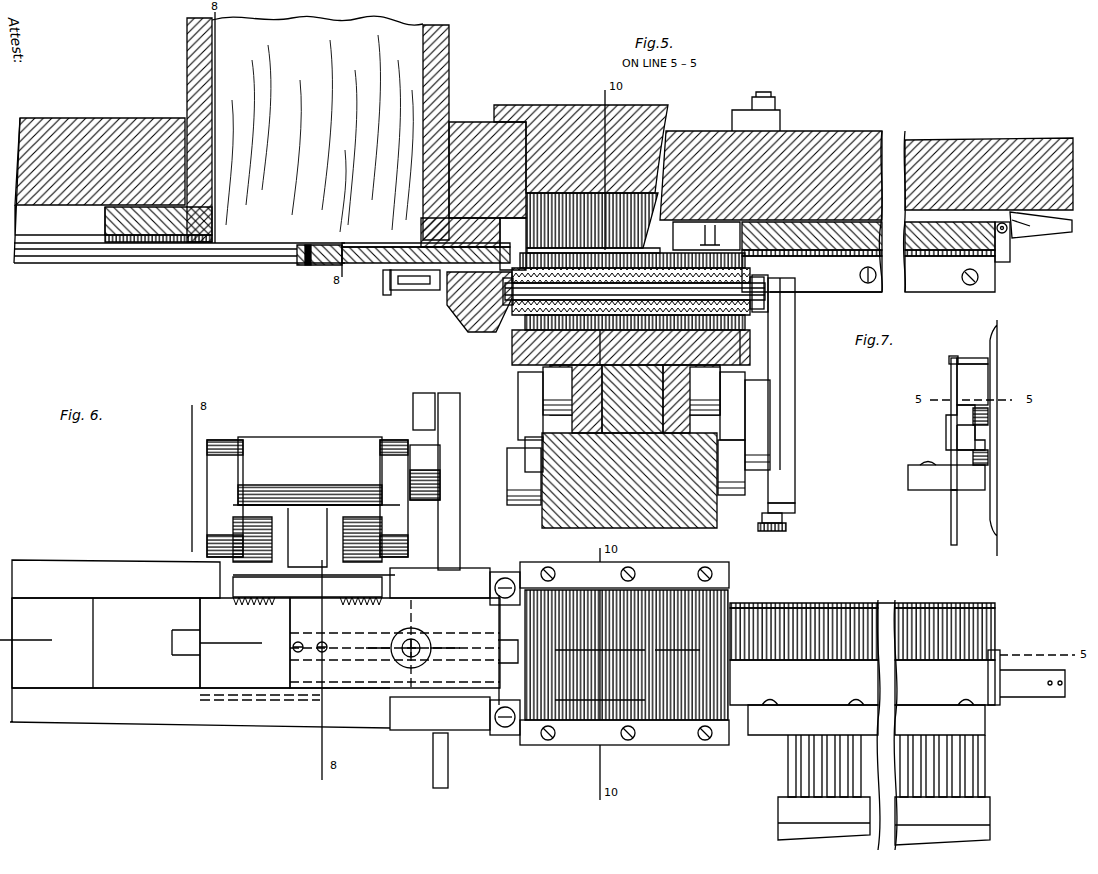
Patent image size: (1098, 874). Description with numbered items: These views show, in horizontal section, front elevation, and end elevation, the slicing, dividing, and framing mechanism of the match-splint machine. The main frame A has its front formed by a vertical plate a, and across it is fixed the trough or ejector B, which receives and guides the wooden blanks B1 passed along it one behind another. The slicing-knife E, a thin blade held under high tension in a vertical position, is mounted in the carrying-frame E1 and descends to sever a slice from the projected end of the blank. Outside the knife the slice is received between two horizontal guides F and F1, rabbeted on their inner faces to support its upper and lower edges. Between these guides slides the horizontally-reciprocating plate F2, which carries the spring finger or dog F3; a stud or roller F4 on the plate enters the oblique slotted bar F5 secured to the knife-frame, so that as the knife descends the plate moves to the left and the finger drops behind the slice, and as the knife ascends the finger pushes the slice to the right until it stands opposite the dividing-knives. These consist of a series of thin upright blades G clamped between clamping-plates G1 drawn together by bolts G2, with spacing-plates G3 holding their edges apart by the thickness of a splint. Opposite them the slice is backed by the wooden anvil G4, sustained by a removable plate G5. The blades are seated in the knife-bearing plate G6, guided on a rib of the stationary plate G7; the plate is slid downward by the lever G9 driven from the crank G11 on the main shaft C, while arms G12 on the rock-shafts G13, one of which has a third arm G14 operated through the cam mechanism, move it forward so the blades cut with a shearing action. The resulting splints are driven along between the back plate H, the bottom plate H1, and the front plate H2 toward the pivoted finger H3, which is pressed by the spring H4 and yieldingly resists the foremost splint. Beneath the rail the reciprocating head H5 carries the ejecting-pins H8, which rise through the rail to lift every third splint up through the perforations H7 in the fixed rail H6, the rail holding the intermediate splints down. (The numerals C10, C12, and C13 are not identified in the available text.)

In FIG. 5, the main frame A is at (112, 113).
In FIG. 5, the vertical plate a is at (544, 169).
In FIG. 5, the trough or ejector B is at (188, 66).
In FIG. 5, the wooden blocks or blanks B1 is at (298, 149).
In FIG. 6, the wooden blocks or blanks B1 is at (258, 664).
In FIG. 6, the main shaft C is at (316, 521).
In FIG. 6, the carriage rollers C10 is at (309, 498).
In FIG. 6, the carriage roller C12 is at (425, 446).
In FIG. 6, the carriage arm C13 is at (452, 540).
In FIG. 5, the slicing-knife E is at (420, 226).
In FIG. 5, the carrying-frame E1 is at (452, 335).
In FIG. 6, the horizontal bar or guide F is at (166, 589).
In FIG. 5, the horizontal bar or guide F1 is at (200, 258).
In FIG. 6, the horizontal bar or guide F1 is at (78, 713).
In FIG. 5, the horizontally-reciprocating plate F2 is at (340, 263).
In FIG. 6, the horizontally-reciprocating plate F2 is at (364, 623).
In FIG. 5, the spring finger or dog F3 is at (390, 249).
In FIG. 6, the spring finger or dog F3 is at (498, 668).
In FIG. 5, the stud or roller F4 is at (415, 290).
In FIG. 6, the stud or roller F4 is at (400, 658).
In FIG. 5, the oblique slotted bar F5 is at (388, 292).
In FIG. 5, the dividing-knives G is at (632, 291).
In FIG. 5, the clamping-plates G1 is at (723, 267).
In FIG. 5, the bolts G2 is at (634, 291).
In FIG. 5, the spacing-plates G3 is at (712, 347).
In FIG. 5, the anvil G4 is at (593, 223).
In FIG. 5, the removable plate G5 is at (589, 100).
In FIG. 5, the knife-bearing plate G6 is at (548, 421).
In FIG. 5, the stationary plate G7 is at (629, 480).
In FIG. 5, the lever G9 is at (628, 347).
In FIG. 5, the crank G11 is at (631, 347).
In FIG. 5, the arms G12 is at (748, 430).
In FIG. 5, the rock-shafts G13 is at (508, 466).
In FIG. 5, the third arm G14 is at (794, 389).
In FIG. 5, the back plate H is at (900, 242).
In FIG. 7, the back plate H is at (980, 390).
In FIG. 6, the bottom plate H1 is at (786, 730).
In FIG. 7, the bottom plate H1 is at (976, 488).
In FIG. 5, the front plate H2 is at (815, 256).
In FIG. 6, the front plate H2 is at (838, 687).
In FIG. 7, the front plate H2 is at (947, 436).
In FIG. 5, the pivoted finger or resistant H3 is at (998, 248).
In FIG. 6, the pivoted finger or resistant H3 is at (996, 663).
In FIG. 7, the pivoted finger or resistant H3 is at (975, 445).
In FIG. 5, the spring H4 is at (1070, 247).
In FIG. 6, the vertical reciprocating head H5 is at (850, 816).
In FIG. 6, the fixed rail H6 is at (770, 608).
In FIG. 7, the fixed rail H6 is at (980, 353).
In FIG. 6, the openings or perforations H7 is at (846, 608).
In FIG. 7, the openings or perforations H7 is at (949, 361).
In FIG. 6, the ejecting-pins H8 is at (790, 765).
In FIG. 7, the ejecting-pins H8 is at (950, 512).